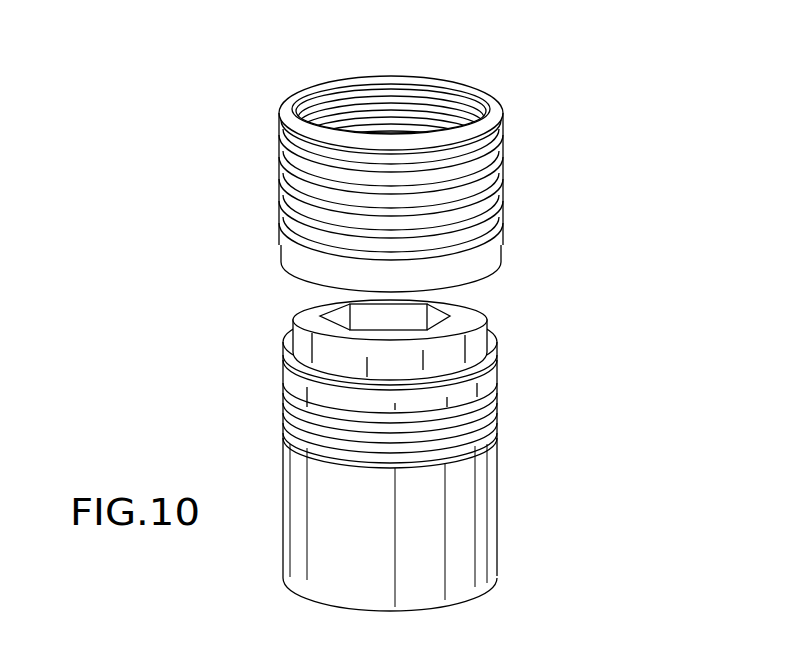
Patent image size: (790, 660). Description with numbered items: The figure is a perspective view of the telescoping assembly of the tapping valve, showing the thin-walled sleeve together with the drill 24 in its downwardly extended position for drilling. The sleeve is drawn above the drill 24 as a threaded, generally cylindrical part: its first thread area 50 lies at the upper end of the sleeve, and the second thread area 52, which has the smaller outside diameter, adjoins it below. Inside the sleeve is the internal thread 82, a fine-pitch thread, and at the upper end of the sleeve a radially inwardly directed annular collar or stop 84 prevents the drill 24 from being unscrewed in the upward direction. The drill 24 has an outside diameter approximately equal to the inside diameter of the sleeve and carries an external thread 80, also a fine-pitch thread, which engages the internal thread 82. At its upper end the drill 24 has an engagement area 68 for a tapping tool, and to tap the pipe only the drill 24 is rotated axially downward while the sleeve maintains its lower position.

The drill 24 is at (472, 436).
The first thread area 50 is at (381, 166).
The second thread area 52 is at (287, 237).
The engagement area 68 is at (484, 313).
The external thread 80 is at (500, 436).
The internal thread 82 is at (372, 109).
The annular collar or stop 84 is at (496, 115).